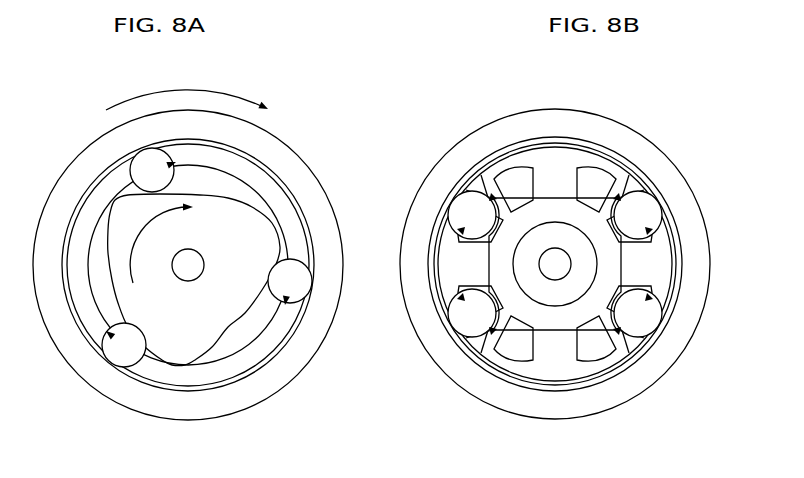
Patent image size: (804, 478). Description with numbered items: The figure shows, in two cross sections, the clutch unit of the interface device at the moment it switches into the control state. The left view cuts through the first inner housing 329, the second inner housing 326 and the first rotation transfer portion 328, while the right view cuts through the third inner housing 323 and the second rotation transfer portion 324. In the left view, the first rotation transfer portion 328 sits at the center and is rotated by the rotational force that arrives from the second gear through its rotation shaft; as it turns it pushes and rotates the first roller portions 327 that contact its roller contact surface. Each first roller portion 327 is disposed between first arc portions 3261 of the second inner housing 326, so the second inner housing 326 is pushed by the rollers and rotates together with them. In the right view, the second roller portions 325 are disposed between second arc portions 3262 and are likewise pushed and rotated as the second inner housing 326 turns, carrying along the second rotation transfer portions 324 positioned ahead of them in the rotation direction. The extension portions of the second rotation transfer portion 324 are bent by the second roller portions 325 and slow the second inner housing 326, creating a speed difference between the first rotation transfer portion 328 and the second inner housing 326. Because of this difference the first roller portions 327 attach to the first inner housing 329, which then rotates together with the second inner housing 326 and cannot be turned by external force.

In FIG. 8B, the third inner housing 323 is at (697, 268).
In FIG. 8B, the second rotation transfer portion 324 is at (573, 162).
In FIG. 8B, the second roller portion 325 is at (660, 191).
In FIG. 8A, the second inner housing 326 is at (262, 160).
In FIG. 8A, the first arc portion 3261 is at (308, 182).
In FIG. 8B, the second arc portion 3262 is at (414, 330).
In FIG. 8A, the first roller portion 327 is at (108, 352).
In FIG. 8A, the first rotation transfer portion 328 is at (227, 310).
In FIG. 8A, the first inner housing 329 is at (280, 165).